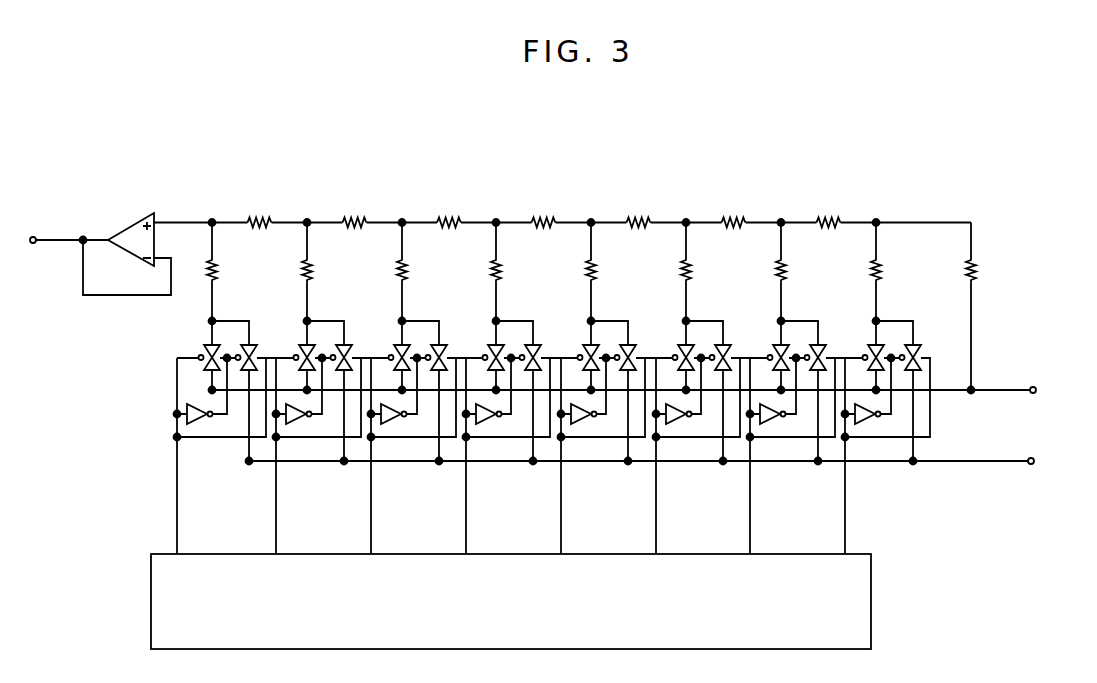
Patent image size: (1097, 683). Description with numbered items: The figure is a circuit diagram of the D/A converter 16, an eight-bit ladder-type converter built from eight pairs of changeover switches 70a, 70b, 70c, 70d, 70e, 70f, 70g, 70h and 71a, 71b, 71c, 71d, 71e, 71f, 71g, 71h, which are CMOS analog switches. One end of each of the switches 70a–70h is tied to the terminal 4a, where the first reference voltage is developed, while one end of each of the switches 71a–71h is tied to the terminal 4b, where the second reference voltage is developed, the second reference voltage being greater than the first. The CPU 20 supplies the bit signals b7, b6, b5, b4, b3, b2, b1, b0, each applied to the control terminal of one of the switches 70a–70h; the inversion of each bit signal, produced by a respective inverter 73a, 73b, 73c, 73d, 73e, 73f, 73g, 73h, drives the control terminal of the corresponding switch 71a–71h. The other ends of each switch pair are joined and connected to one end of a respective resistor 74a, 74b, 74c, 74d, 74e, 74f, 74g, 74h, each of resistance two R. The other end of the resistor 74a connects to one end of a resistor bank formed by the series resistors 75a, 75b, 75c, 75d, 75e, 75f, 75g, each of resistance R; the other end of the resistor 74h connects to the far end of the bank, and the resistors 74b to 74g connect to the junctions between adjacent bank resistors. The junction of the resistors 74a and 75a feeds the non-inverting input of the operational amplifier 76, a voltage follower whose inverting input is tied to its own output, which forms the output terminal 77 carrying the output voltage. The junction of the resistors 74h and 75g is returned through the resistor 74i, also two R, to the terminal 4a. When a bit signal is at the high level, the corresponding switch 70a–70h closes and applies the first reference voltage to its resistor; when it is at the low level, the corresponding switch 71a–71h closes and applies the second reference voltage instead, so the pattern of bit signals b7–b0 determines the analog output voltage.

The D/A converter 16 is at (903, 208).
The CPU 20 is at (873, 587).
The terminal 4a is at (1036, 387).
The terminal 4b is at (1034, 458).
The operational amplifier 76 is at (128, 233).
The output terminal 77 is at (35, 244).
The changeover switch 70a is at (205, 345).
The changeover switch 70b is at (300, 345).
The changeover switch 70c is at (395, 345).
The changeover switch 70d is at (489, 345).
The changeover switch 70e is at (584, 345).
The changeover switch 70f is at (679, 345).
The changeover switch 70g is at (774, 345).
The changeover switch 70h is at (869, 345).
The changeover switch 71a is at (244, 344).
The changeover switch 71b is at (339, 344).
The changeover switch 71c is at (434, 344).
The changeover switch 71d is at (528, 344).
The changeover switch 71e is at (623, 344).
The changeover switch 71f is at (718, 344).
The changeover switch 71g is at (813, 344).
The changeover switch 71h is at (908, 344).
The inverter 73a is at (204, 421).
The inverter 73b is at (303, 421).
The inverter 73c is at (398, 421).
The inverter 73d is at (493, 421).
The inverter 73e is at (588, 421).
The inverter 73f is at (683, 421).
The inverter 73g is at (777, 421).
The inverter 73h is at (872, 421).
The resistor 74a is at (217, 267).
The resistor 74b is at (312, 267).
The resistor 74c is at (407, 267).
The resistor 74d is at (501, 267).
The resistor 74e is at (596, 267).
The resistor 74f is at (691, 267).
The resistor 74g is at (786, 267).
The resistor 74h is at (881, 267).
The resistor 74i is at (976, 267).
The resistor 75a is at (270, 219).
The resistor 75b is at (366, 219).
The resistor 75c is at (460, 219).
The resistor 75d is at (554, 219).
The resistor 75e is at (650, 219).
The resistor 75f is at (744, 219).
The resistor 75g is at (840, 219).
The bit signal b7 is at (178, 535).
The bit signal b6 is at (277, 535).
The bit signal b5 is at (372, 535).
The bit signal b4 is at (467, 535).
The bit signal b3 is at (562, 535).
The bit signal b2 is at (657, 535).
The bit signal b1 is at (751, 535).
The bit signal b0 is at (846, 535).